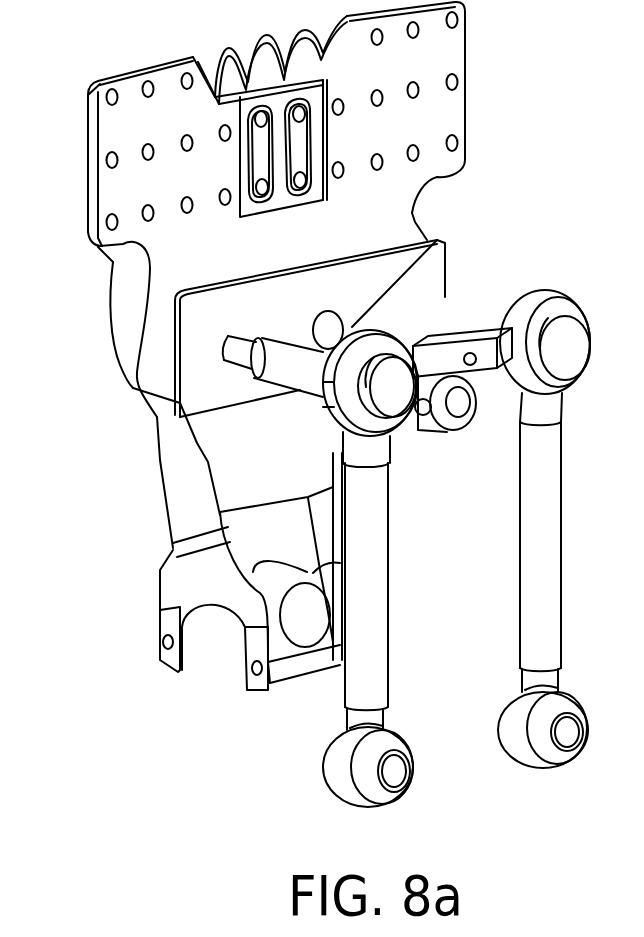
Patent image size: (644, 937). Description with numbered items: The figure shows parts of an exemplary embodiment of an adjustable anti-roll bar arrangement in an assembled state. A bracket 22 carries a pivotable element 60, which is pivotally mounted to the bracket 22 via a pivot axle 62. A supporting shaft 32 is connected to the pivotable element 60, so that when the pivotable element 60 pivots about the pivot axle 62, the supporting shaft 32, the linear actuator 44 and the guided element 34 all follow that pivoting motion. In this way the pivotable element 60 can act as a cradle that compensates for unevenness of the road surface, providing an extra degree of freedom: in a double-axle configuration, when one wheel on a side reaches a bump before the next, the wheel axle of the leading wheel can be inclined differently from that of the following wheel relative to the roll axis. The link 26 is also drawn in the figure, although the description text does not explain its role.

The bracket 22 is at (430, 58).
The link rod 26 is at (540, 525).
The supporting shaft 32 is at (295, 367).
The guided element 34 is at (467, 334).
The linear actuator 44 is at (470, 413).
The pivotable element 60 is at (203, 337).
The pivot axle 62 is at (330, 328).